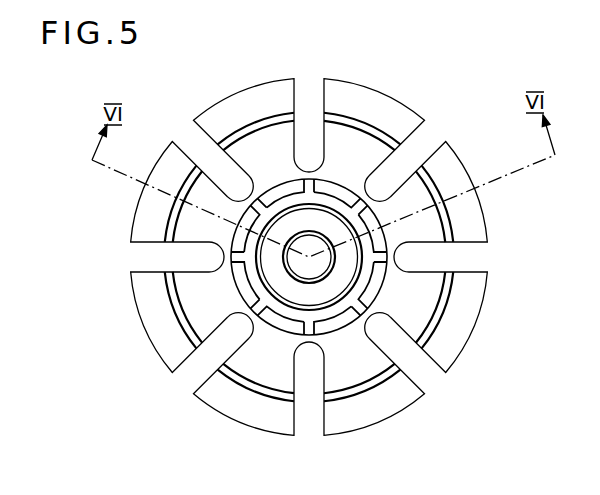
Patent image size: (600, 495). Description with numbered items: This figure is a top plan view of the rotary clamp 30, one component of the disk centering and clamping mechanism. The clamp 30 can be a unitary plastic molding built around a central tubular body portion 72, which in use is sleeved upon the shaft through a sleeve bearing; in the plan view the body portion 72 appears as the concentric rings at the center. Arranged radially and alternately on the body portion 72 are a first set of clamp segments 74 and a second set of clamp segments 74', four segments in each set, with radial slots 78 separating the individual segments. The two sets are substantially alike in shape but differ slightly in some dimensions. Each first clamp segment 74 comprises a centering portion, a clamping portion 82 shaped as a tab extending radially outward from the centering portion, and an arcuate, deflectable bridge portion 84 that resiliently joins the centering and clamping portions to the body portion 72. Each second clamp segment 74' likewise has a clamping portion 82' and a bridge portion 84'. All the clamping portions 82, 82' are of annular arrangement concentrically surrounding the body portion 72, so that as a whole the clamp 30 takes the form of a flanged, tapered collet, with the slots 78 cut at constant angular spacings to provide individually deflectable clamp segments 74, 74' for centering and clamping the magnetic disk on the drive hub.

The rotary clamp 30 is at (376, 76).
The central tubular body portion 72 is at (283, 205).
The first set of clamp segments 74 is at (333, 264).
The second set of clamp segments 74' is at (290, 234).
The slots 78 is at (146, 246).
The clamping portion 82 is at (280, 215).
The clamping portion 82' is at (461, 228).
The bridge portion 84 is at (266, 257).
The bridge portion 84' is at (345, 257).